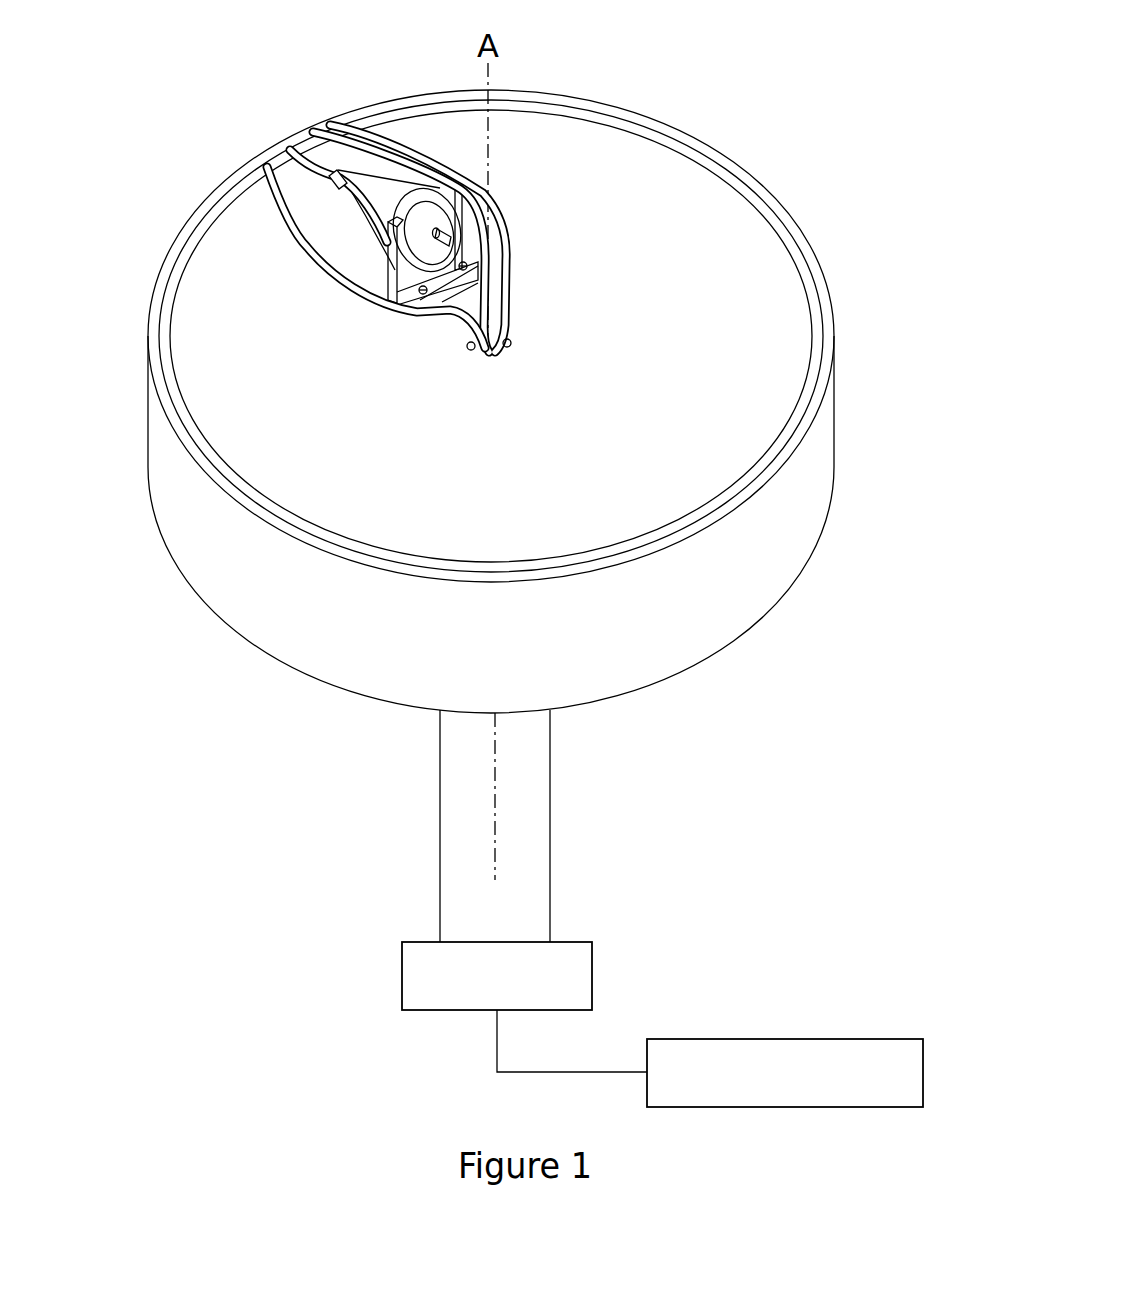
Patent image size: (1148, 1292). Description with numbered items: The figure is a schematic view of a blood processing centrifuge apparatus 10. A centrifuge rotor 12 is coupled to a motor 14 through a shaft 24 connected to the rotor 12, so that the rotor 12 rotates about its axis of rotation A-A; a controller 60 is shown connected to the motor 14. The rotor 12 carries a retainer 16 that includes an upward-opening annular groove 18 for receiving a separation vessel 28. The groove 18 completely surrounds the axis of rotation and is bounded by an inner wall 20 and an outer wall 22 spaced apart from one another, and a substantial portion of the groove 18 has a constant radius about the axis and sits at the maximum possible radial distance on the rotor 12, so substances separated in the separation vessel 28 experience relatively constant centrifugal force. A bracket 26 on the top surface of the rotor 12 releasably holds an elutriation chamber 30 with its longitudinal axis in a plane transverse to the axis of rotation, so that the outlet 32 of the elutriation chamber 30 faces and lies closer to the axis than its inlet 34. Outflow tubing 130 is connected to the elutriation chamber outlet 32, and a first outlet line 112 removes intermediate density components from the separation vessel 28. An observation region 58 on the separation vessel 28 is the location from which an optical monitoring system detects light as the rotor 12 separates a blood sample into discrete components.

The centrifuge apparatus 10 is at (716, 137).
The centrifuge rotor 12 is at (162, 545).
The motor 14 is at (592, 976).
The retainer 16 is at (718, 460).
The annular groove 18 is at (770, 460).
The inner wall 20 is at (790, 420).
The outer wall 22 is at (810, 423).
The shaft 24 is at (550, 869).
The bracket 26 is at (388, 278).
The separation vessel 28 is at (432, 108).
The elutriation chamber 30 is at (360, 213).
The outlet 32 is at (438, 247).
The inlet 34 is at (335, 182).
The observation region 58 is at (280, 143).
The controller 60 is at (815, 1039).
The first outlet line 112 is at (307, 175).
The outflow tubing 130 is at (495, 298).